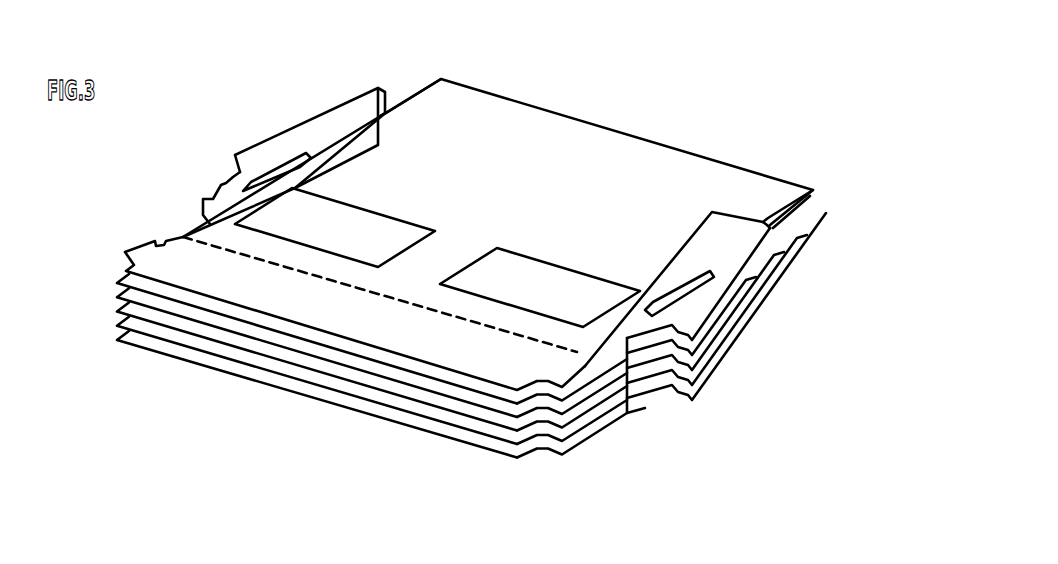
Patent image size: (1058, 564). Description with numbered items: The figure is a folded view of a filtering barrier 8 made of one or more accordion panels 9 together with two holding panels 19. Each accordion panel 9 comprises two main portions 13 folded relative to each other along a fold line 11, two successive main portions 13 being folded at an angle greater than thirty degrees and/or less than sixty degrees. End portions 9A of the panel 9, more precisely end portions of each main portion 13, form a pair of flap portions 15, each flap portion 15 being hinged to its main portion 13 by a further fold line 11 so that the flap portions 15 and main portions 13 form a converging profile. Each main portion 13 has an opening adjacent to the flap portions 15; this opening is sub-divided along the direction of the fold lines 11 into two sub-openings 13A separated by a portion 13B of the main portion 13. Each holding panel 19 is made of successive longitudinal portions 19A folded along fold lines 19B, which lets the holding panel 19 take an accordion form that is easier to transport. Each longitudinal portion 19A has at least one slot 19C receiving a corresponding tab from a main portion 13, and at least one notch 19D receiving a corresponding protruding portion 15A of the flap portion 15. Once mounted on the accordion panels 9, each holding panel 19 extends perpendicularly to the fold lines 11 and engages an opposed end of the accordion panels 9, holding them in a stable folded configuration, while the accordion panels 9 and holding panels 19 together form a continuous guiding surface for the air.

The filtering barrier 8 is at (768, 150).
The accordion panel 9 is at (628, 128).
The end portion 9A is at (418, 298).
The fold line 11 is at (561, 105).
The main portion 13 is at (479, 208).
The sub-opening 13A is at (364, 241).
The portion 13B is at (463, 266).
The flap portion 15 is at (271, 299).
The protruding portion 15A is at (562, 443).
The holding panel 19 is at (386, 80).
The longitudinal portion 19A is at (365, 146).
The fold line 19B is at (746, 360).
The slot 19C is at (293, 160).
The notch 19D is at (226, 200).